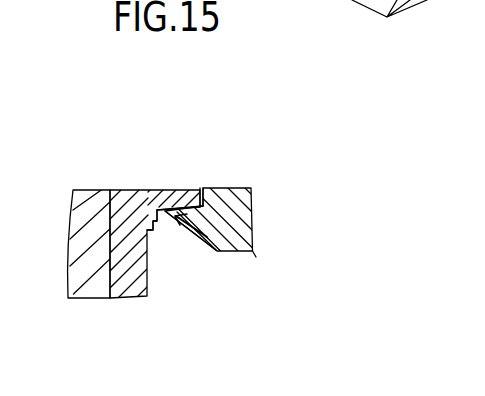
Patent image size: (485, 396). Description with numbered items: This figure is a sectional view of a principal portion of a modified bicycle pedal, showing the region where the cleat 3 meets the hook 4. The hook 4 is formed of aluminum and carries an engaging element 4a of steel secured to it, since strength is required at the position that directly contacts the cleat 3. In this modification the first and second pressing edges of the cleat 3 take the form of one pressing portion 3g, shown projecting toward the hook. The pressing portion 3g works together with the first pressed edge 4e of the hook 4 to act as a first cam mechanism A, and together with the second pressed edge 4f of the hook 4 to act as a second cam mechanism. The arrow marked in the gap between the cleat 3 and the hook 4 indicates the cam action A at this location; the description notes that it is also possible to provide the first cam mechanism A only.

The hook 4 is at (82, 188).
The engaging element 4a is at (132, 188).
The first pressed edge 4e is at (201, 188).
The cleat 3 is at (242, 187).
The pressing portion 3g is at (177, 218).
The second pressed edge 4f is at (162, 217).
The first cam mechanism A is at (216, 250).